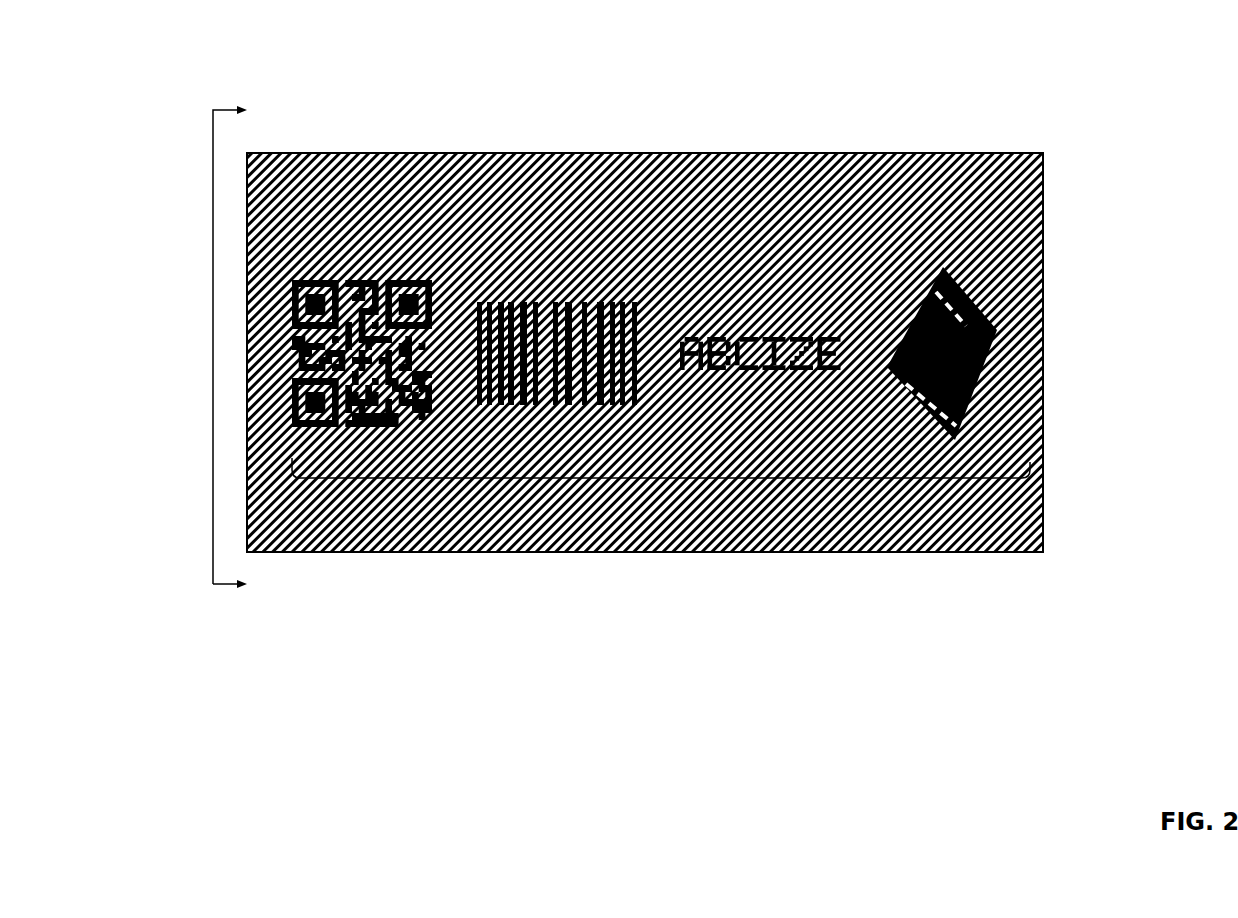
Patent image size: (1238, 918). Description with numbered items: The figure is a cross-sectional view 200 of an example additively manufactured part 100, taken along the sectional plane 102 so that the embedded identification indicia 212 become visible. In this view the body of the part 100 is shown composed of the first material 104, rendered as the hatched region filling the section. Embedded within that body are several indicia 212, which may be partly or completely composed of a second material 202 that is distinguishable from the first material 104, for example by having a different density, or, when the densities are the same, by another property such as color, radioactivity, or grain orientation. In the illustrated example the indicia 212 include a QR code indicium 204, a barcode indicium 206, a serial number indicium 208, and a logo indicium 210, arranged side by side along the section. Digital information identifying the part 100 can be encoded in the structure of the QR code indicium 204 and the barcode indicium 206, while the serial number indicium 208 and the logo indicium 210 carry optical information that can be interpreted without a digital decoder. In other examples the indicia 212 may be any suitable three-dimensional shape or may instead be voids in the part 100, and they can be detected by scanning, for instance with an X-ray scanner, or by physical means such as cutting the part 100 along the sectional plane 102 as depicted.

The additively manufactured part 100 is at (988, 99).
The sectional plane 102 is at (213, 148).
The first material 104 is at (723, 152).
The cross-sectional view 200 is at (1064, 26).
The second material 202 is at (393, 428).
The QR code indicium 204 is at (351, 251).
The barcode indicium 206 is at (546, 252).
The serial number indicium 208 is at (736, 252).
The logo indicium 210 is at (931, 252).
The identification indicia 212 is at (662, 478).